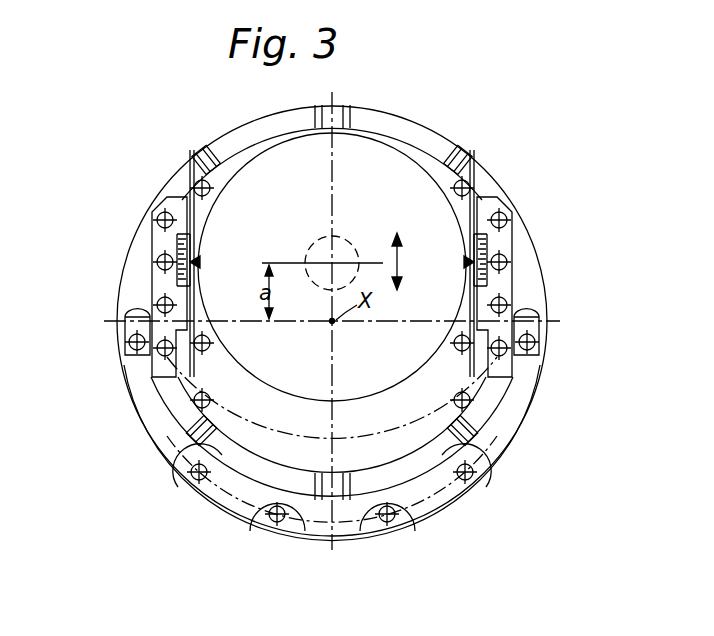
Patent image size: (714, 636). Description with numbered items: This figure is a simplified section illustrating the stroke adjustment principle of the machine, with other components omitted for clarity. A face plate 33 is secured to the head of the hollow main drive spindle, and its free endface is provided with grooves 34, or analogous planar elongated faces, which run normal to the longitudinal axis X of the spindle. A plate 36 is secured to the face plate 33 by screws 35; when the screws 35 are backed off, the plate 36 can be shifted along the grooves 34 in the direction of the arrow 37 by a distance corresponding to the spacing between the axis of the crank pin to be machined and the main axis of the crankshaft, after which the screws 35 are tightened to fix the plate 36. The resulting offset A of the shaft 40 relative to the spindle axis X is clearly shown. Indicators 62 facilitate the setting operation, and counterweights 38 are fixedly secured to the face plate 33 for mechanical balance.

The face plate 33 is at (232, 142).
The grooves 34 is at (200, 148).
The screws 35 is at (176, 200).
The plate 36 is at (432, 160).
The arrow 37 is at (417, 260).
The counterweights 38 is at (157, 412).
The shaft 40 is at (318, 246).
The indicators 62 is at (180, 256).